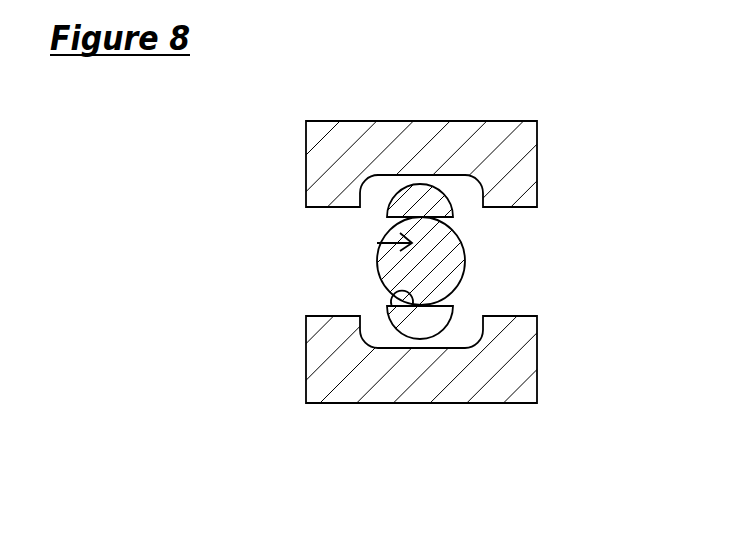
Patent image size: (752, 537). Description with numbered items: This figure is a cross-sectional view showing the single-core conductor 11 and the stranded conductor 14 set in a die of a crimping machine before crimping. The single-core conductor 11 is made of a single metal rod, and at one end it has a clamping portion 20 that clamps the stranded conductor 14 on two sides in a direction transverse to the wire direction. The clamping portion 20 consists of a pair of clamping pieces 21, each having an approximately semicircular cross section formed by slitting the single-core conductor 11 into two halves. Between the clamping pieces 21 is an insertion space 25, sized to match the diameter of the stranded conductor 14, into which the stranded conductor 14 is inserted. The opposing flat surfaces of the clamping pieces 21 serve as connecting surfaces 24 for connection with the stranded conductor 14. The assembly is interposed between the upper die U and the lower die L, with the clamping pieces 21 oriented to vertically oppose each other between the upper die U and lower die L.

The upper die U is at (503, 127).
The lower die L is at (495, 393).
The single-core conductor 11 is at (420, 197).
The clamping portion 20 is at (434, 193).
The clamping pieces 21 is at (437, 316).
The stranded conductor 14 is at (405, 267).
The insertion space 25 is at (377, 243).
The connecting surfaces 24 is at (391, 285).